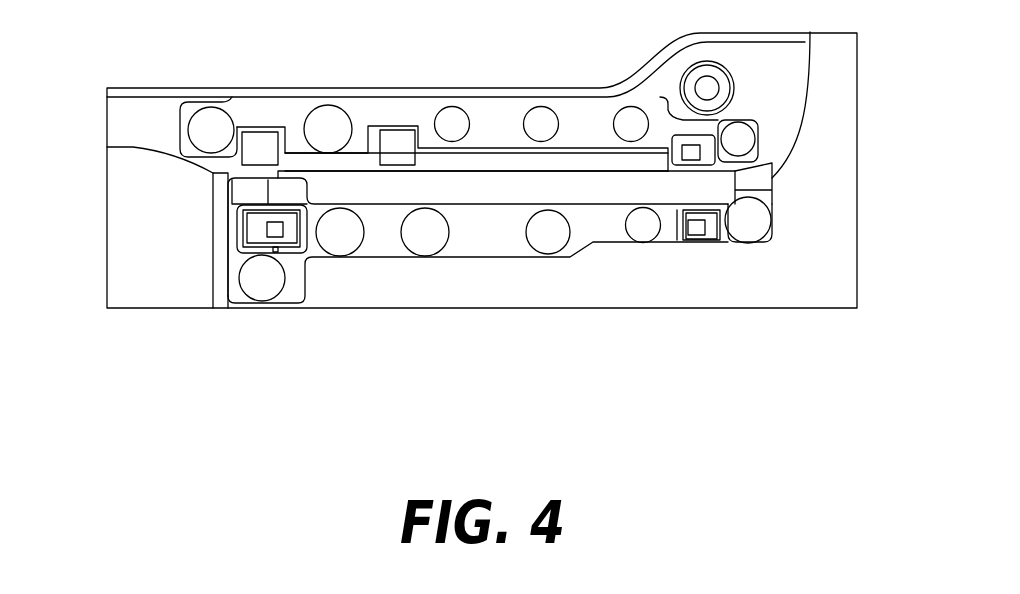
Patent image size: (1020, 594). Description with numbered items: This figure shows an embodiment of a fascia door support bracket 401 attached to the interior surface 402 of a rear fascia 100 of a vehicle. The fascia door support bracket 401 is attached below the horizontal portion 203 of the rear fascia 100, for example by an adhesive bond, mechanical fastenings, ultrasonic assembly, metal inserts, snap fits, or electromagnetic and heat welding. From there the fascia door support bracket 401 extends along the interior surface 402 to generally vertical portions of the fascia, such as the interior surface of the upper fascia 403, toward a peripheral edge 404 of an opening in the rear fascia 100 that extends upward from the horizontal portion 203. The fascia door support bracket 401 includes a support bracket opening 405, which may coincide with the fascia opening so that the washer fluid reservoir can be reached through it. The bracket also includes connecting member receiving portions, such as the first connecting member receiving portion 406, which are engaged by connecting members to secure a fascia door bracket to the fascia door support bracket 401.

The rear fascia 100 is at (124, 62).
The horizontal portion 203 is at (605, 172).
The fascia door support bracket 401 is at (773, 183).
The interior surface 402 is at (160, 256).
The upper fascia 403 is at (393, 276).
The peripheral edge 404 is at (437, 90).
The support bracket opening 405 is at (532, 178).
The first connecting member receiving portion 406 is at (722, 227).